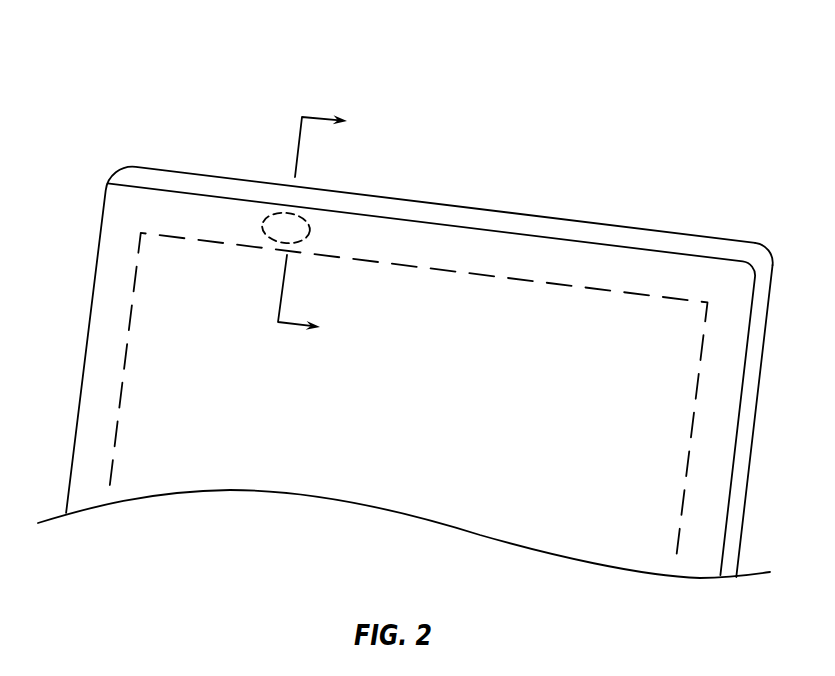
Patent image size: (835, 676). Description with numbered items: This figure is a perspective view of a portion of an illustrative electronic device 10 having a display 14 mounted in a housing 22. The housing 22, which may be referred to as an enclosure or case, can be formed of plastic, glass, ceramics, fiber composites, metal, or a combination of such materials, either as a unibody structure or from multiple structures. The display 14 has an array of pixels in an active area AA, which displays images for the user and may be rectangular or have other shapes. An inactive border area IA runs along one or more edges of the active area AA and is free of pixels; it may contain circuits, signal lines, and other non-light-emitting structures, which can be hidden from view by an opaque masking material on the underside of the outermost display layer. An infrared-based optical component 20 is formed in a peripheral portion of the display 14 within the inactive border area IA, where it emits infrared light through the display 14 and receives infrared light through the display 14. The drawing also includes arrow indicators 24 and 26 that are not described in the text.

The electronic device 10 is at (508, 74).
The display 14 is at (150, 320).
The infrared-based optical component 20 is at (312, 230).
The housing 22 is at (753, 250).
The edge line 24 is at (298, 138).
The direction arrow 26 is at (318, 114).
The active area AA is at (135, 404).
The inactive border area IA is at (567, 270).